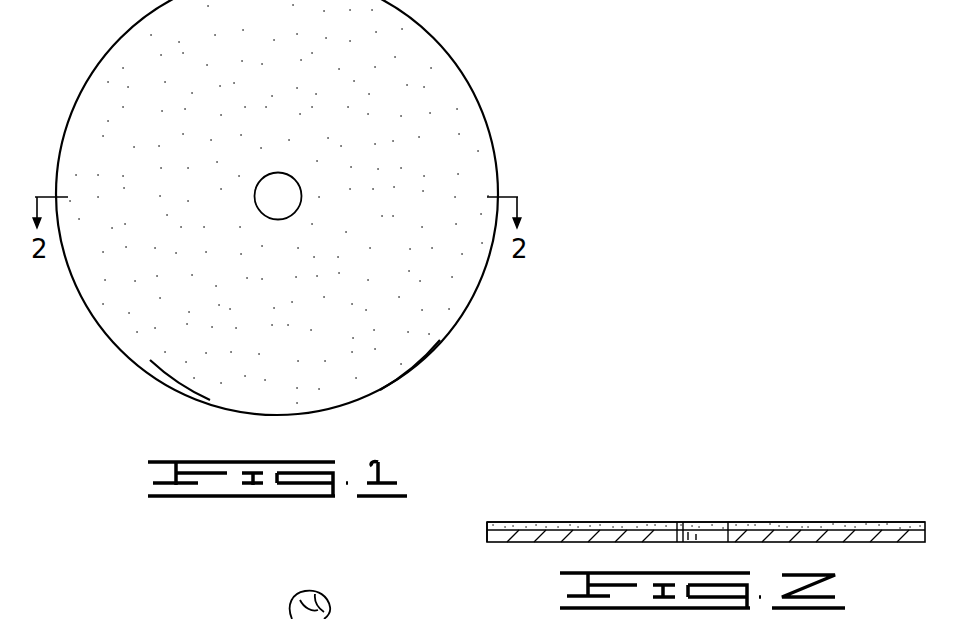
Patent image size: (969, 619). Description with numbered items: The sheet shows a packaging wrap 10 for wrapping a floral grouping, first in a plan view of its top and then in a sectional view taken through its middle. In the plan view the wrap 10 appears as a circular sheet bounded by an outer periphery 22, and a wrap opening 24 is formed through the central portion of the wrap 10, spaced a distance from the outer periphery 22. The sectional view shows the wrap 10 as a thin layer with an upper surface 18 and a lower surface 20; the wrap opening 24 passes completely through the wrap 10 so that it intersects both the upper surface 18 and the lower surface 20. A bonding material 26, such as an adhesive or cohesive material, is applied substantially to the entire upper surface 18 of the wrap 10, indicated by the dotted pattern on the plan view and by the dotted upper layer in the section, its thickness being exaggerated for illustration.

In FIG. 1, the wrap 10 is at (463, 61).
In FIG. 2, the wrap 10 is at (530, 543).
In FIG. 1, the upper surface 18 is at (445, 310).
In FIG. 2, the upper surface 18 is at (542, 530).
In FIG. 2, the lower surface 20 is at (843, 543).
In FIG. 1, the outer periphery 22 is at (395, 383).
In FIG. 2, the outer periphery 22 is at (487, 536).
In FIG. 1, the wrap opening 24 is at (270, 181).
In FIG. 2, the wrap opening 24 is at (728, 537).
In FIG. 1, the bonding material 26 is at (183, 381).
In FIG. 2, the bonding material 26 is at (780, 522).